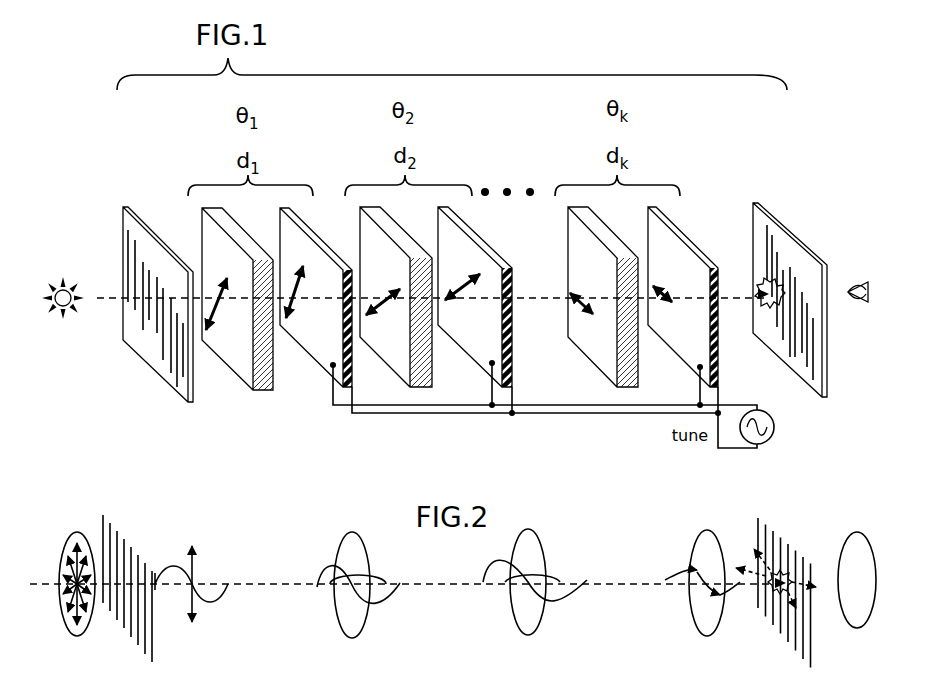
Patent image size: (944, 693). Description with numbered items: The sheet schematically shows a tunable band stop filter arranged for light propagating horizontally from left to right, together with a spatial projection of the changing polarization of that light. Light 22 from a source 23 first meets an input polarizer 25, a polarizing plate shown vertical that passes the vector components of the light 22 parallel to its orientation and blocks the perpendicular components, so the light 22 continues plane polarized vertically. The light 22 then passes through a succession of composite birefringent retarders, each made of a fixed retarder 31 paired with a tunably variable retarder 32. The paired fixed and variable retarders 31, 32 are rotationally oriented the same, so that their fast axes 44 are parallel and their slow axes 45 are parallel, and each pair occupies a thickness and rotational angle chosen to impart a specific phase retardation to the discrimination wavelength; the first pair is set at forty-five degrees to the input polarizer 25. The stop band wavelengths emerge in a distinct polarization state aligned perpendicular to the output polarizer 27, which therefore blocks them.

In FIG. 1, the source 23 is at (67, 292).
In FIG. 2, the source 23 is at (76, 545).
In FIG. 1, the light 22 is at (110, 300).
In FIG. 2, the light 22 is at (260, 578).
In FIG. 1, the input polarizer 25 is at (165, 370).
In FIG. 2, the input polarizer 25 is at (125, 598).
In FIG. 1, the fast axis 44 is at (213, 283).
In FIG. 1, the slow axis 45 is at (215, 325).
In FIG. 1, the fixed retarder 31 is at (267, 389).
In FIG. 1, the variable retarder 32 is at (307, 336).
In FIG. 1, the output polarizer 27 is at (805, 378).
In FIG. 2, the output polarizer 27 is at (788, 633).